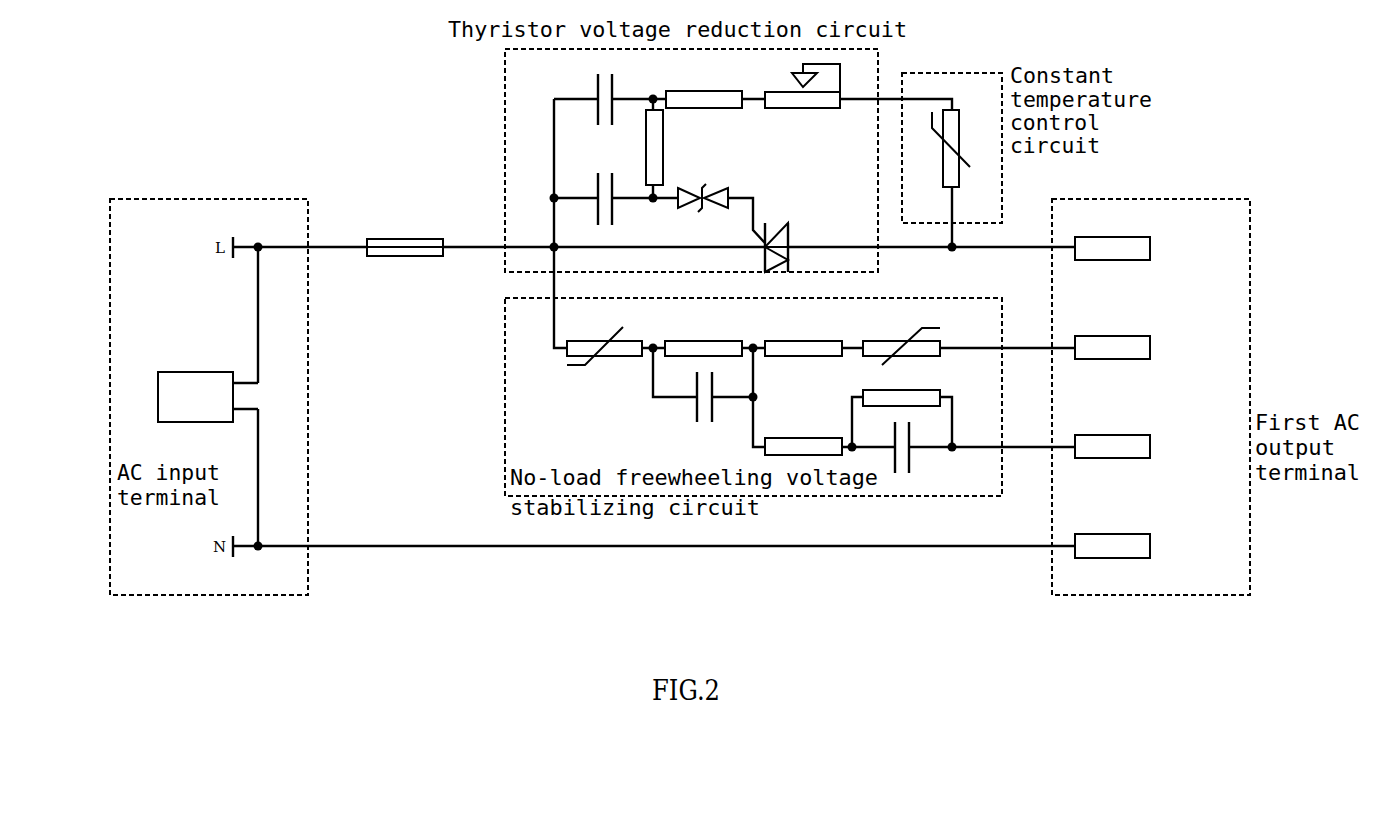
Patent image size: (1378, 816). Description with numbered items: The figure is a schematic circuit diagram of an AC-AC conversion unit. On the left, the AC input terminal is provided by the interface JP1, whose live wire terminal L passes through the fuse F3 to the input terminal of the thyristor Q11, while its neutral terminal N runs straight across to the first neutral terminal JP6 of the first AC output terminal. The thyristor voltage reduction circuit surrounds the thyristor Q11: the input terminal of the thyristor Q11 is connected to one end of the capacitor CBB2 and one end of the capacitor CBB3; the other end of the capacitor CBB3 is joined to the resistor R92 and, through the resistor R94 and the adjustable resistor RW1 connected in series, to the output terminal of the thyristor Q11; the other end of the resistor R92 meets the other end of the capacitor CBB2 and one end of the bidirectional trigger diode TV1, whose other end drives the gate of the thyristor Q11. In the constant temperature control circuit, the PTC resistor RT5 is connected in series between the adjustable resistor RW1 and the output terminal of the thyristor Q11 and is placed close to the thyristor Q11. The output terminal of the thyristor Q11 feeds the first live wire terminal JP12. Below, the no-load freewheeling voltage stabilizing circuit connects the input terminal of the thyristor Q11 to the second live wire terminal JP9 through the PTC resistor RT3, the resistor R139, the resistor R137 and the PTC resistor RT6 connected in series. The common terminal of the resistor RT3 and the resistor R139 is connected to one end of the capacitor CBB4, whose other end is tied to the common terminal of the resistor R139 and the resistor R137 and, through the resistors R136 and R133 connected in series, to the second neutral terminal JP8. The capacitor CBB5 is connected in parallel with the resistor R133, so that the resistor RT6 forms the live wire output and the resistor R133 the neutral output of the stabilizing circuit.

The fuse F3 is at (400, 230).
The interface of the AC input terminal JP1 is at (195, 384).
The capacitor CBB3 is at (600, 90).
The resistor R94 is at (704, 89).
The adjustable resistor RW1 is at (802, 96).
The resistor R92 is at (674, 147).
The capacitor CBB2 is at (608, 188).
The bidirectional trigger diode TV1 is at (722, 195).
The thyristor Q11 is at (799, 247).
The PTC resistor RT5 is at (961, 148).
The resistor RT3 is at (604, 344).
The resistor R139 is at (703, 339).
The resistor R137 is at (803, 339).
The resistor RT6 is at (901, 344).
The resistor R133 is at (901, 389).
The capacitor CBB4 is at (699, 408).
The resistor R136 is at (803, 457).
The capacitor CBB5 is at (930, 449).
The first live wire terminal JP12 is at (1112, 238).
The second live wire terminal JP9 is at (1112, 337).
The second neutral terminal JP8 is at (1112, 437).
The first neutral terminal JP6 is at (1112, 536).